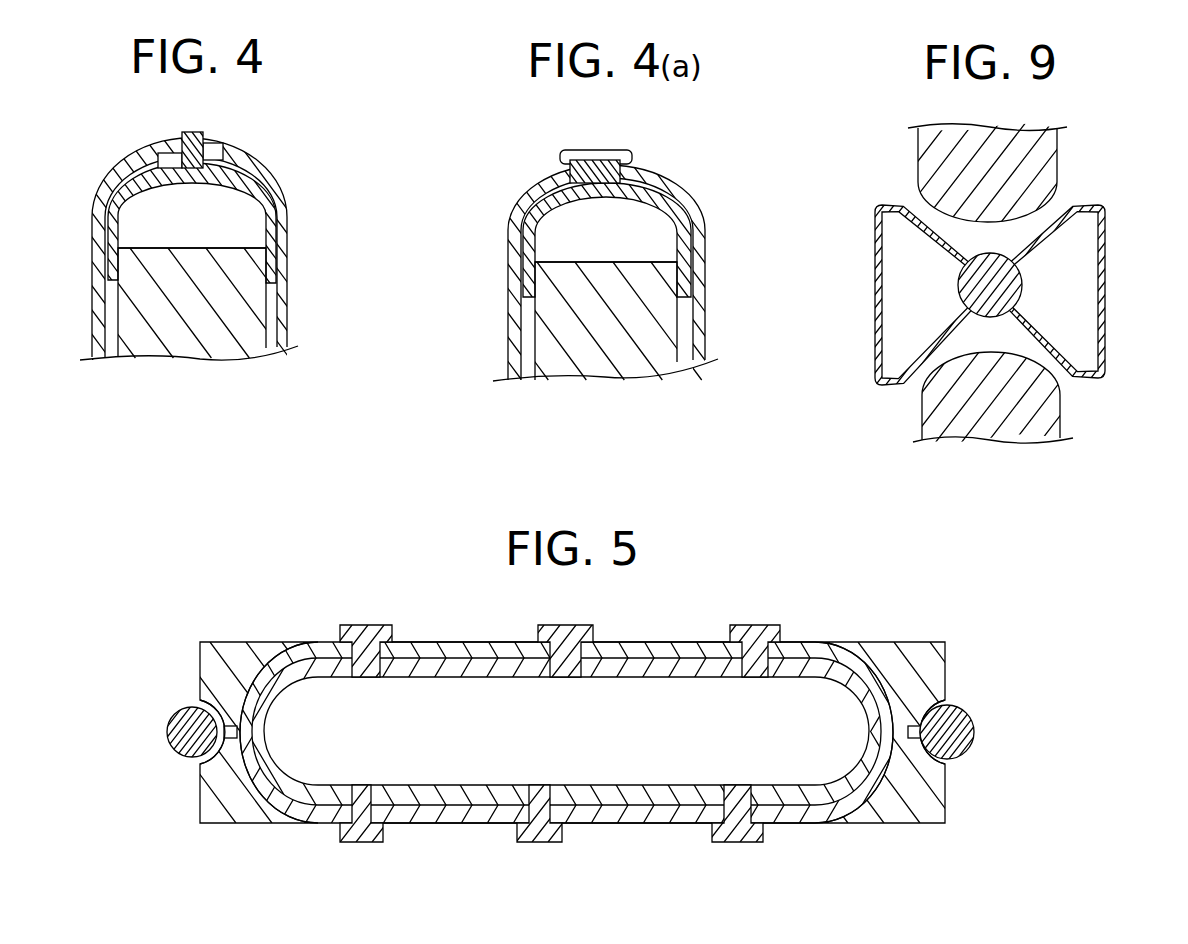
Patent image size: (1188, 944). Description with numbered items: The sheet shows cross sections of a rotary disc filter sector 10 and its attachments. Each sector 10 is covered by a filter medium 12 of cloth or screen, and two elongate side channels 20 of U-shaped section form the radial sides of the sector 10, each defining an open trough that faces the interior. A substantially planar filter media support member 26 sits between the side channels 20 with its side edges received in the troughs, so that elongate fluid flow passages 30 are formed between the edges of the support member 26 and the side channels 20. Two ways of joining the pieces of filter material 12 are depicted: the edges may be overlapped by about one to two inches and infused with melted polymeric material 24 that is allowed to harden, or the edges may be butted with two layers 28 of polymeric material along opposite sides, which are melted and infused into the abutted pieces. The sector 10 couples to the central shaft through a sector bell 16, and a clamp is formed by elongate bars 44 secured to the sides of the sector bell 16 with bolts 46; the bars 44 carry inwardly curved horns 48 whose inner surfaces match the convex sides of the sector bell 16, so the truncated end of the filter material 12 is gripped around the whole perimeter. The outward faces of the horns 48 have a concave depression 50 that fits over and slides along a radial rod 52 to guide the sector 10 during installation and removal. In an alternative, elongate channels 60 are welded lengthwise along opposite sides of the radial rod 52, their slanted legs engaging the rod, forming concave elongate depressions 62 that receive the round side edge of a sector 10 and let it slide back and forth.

In FIG. 9, the sector 10 is at (1022, 165).
In FIG. 4, the filter medium 12 is at (137, 147).
In FIG. 4A, the filter medium 12 is at (537, 182).
In FIG. 5, the filter medium 12 is at (285, 655).
In FIG. 5, the sector bell 16 is at (266, 748).
In FIG. 4, the side channel 20 is at (107, 205).
In FIG. 4A, the side channel 20 is at (510, 224).
In FIG. 4, the melted polymeric material 24 is at (197, 130).
In FIG. 4, the filter media support member 26 is at (232, 345).
In FIG. 4A, the filter media support member 26 is at (657, 332).
In FIG. 4A, the layer of polymeric material 28 is at (607, 150).
In FIG. 4, the fluid flow passage 30 is at (217, 225).
In FIG. 4A, the fluid flow passage 30 is at (653, 230).
In FIG. 5, the elongate bar 44 is at (430, 640).
In FIG. 5, the bolt 46 is at (360, 625).
In FIG. 5, the horn 48 is at (225, 672).
In FIG. 5, the concave depression 50 is at (187, 698).
In FIG. 9, the radial rod 52 is at (1024, 283).
In FIG. 5, the radial rod 52 is at (175, 724).
In FIG. 9, the elongate channel 60 is at (1103, 234).
In FIG. 9, the concave elongate depression 62 is at (907, 200).